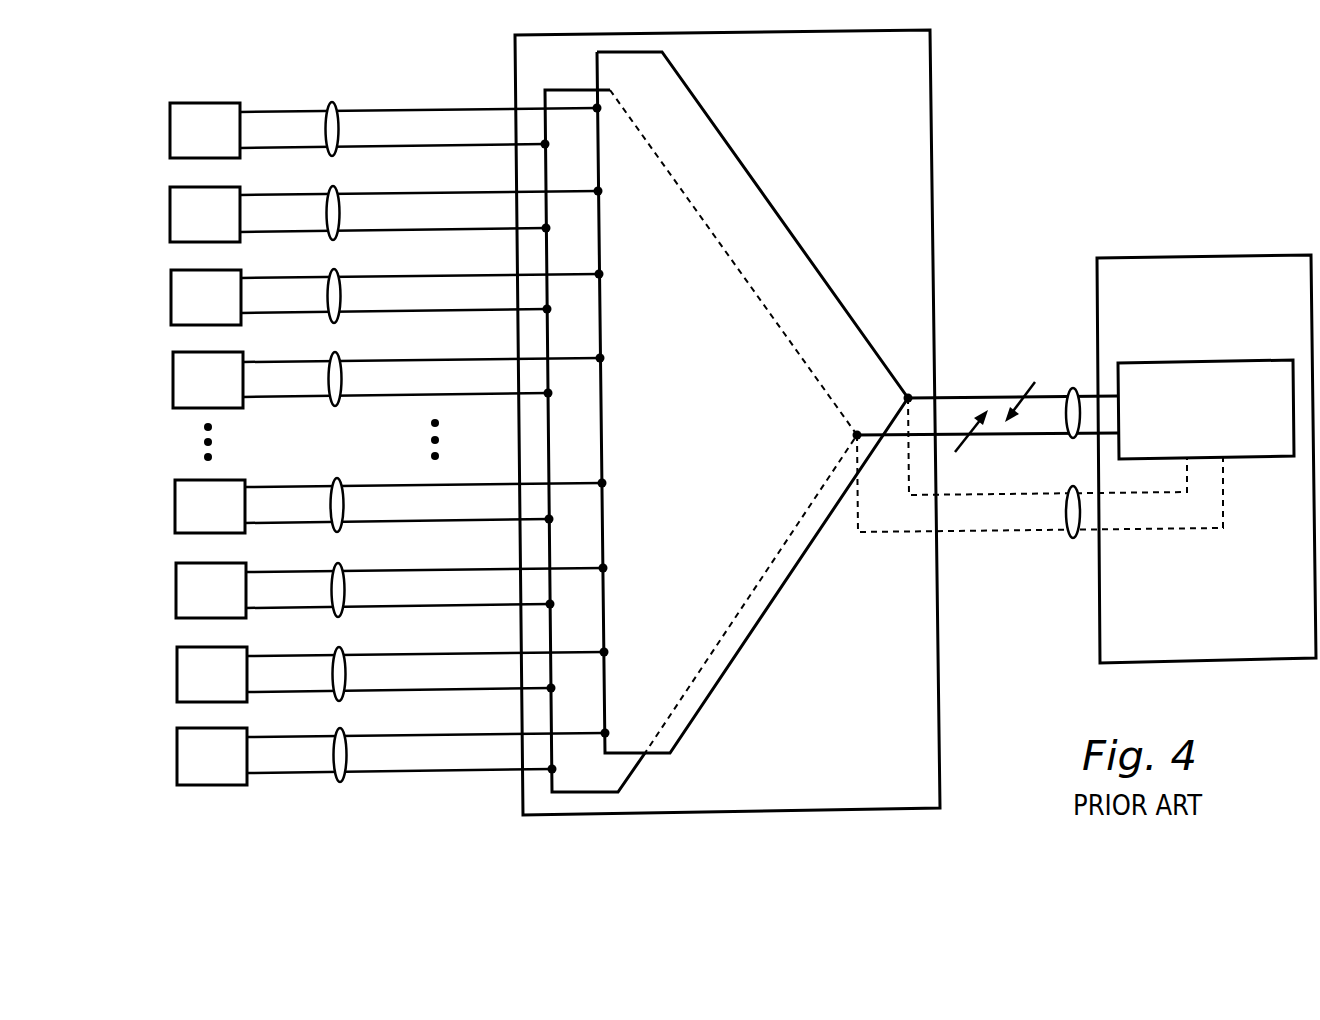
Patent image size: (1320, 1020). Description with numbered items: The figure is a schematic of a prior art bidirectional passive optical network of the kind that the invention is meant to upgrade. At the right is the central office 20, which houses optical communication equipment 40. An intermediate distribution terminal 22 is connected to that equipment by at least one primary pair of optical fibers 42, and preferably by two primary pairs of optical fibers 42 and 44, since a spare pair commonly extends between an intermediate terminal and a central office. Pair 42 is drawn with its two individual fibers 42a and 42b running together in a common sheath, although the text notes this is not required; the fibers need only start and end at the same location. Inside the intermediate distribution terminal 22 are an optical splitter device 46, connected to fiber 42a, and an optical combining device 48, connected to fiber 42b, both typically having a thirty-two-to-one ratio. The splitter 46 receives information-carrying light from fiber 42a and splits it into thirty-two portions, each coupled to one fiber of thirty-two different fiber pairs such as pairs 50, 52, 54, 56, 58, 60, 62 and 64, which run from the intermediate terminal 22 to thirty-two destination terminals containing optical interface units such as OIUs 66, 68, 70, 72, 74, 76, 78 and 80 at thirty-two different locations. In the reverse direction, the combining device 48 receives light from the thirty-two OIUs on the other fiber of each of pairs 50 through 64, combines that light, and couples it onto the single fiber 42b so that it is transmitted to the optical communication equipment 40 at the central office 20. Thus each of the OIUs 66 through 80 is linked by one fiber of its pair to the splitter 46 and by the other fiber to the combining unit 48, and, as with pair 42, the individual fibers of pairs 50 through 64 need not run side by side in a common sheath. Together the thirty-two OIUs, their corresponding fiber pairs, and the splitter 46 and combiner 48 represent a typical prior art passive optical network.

The central office 20 is at (1232, 663).
The intermediate distribution terminal 22 is at (940, 754).
The optical communication equipment 40 is at (1222, 362).
The primary pair of optical fibers 42 is at (1070, 388).
The optical fiber 42a is at (973, 396).
The optical fiber 42b is at (1030, 436).
The primary pair of optical fibers 44 is at (1070, 538).
The optical splitter device 46 is at (803, 250).
The optical combining device 48 is at (633, 773).
The pair of optical fibers 50 is at (337, 103).
The pair of optical fibers 52 is at (338, 187).
The pair of optical fibers 54 is at (339, 270).
The pair of optical fibers 56 is at (340, 352).
The pair of optical fibers 58 is at (342, 480).
The pair of optical fibers 60 is at (343, 563).
The pair of optical fibers 62 is at (344, 647).
The pair of optical fibers 64 is at (345, 728).
The optical interface unit 66 is at (170, 133).
The optical interface unit 68 is at (170, 217).
The optical interface unit 70 is at (171, 300).
The optical interface unit 72 is at (173, 382).
The optical interface unit 74 is at (175, 510).
The optical interface unit 76 is at (176, 593).
The optical interface unit 78 is at (177, 677).
The optical interface unit 80 is at (177, 758).